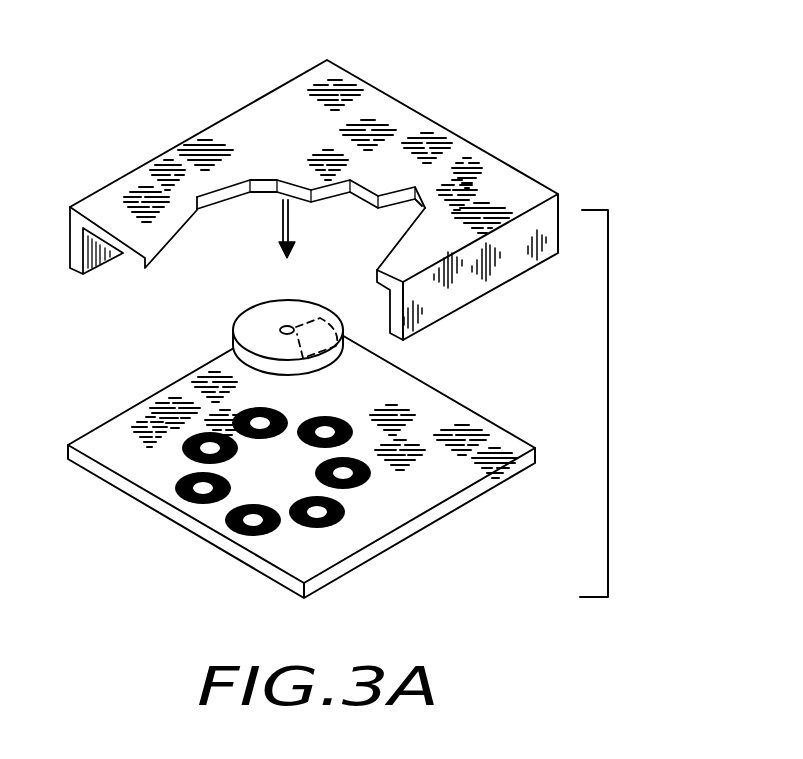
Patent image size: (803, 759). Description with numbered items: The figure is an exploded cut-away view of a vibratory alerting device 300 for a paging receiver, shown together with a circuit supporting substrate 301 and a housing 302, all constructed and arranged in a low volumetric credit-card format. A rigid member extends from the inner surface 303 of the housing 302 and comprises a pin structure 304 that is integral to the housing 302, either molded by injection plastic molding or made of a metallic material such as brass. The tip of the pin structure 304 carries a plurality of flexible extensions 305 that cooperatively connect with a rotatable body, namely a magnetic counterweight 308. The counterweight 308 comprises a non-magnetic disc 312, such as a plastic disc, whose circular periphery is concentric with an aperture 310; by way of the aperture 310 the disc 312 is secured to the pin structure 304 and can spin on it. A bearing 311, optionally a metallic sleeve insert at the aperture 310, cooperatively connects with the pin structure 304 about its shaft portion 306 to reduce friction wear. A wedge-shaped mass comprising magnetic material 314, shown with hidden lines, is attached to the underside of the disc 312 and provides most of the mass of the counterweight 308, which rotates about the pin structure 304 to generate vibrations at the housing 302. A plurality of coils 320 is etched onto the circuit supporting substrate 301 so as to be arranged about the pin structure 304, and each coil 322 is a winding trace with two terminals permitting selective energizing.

The vibratory alerting device 300 is at (608, 343).
The circuit supporting substrate 301 is at (480, 470).
The housing 302 is at (221, 106).
The inner surface 303 is at (313, 196).
The pin structure 304 is at (312, 231).
The flexible extensions 305 is at (295, 241).
The shaft portion 306 is at (281, 214).
The magnetic counterweight 308 is at (360, 342).
The aperture 310 is at (287, 323).
The bearing 311 is at (292, 325).
The non-magnetic disc 312 is at (246, 336).
The wedge-shaped mass comprising magnetic material 314 is at (341, 352).
The plurality of coils 320 is at (195, 514).
The coil 322 is at (344, 513).